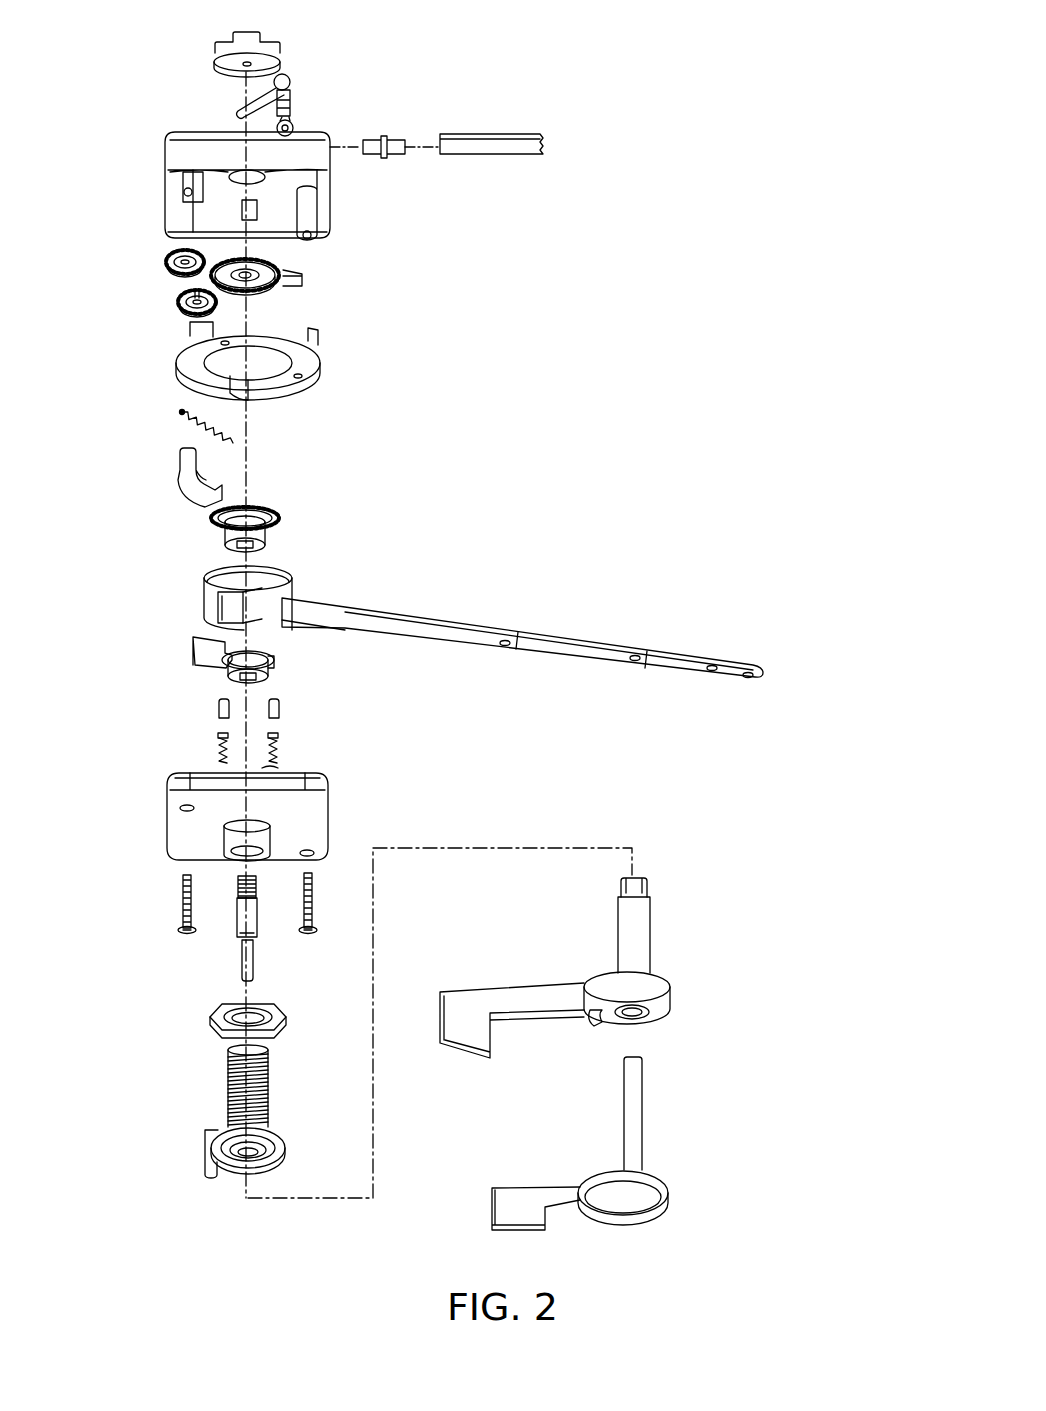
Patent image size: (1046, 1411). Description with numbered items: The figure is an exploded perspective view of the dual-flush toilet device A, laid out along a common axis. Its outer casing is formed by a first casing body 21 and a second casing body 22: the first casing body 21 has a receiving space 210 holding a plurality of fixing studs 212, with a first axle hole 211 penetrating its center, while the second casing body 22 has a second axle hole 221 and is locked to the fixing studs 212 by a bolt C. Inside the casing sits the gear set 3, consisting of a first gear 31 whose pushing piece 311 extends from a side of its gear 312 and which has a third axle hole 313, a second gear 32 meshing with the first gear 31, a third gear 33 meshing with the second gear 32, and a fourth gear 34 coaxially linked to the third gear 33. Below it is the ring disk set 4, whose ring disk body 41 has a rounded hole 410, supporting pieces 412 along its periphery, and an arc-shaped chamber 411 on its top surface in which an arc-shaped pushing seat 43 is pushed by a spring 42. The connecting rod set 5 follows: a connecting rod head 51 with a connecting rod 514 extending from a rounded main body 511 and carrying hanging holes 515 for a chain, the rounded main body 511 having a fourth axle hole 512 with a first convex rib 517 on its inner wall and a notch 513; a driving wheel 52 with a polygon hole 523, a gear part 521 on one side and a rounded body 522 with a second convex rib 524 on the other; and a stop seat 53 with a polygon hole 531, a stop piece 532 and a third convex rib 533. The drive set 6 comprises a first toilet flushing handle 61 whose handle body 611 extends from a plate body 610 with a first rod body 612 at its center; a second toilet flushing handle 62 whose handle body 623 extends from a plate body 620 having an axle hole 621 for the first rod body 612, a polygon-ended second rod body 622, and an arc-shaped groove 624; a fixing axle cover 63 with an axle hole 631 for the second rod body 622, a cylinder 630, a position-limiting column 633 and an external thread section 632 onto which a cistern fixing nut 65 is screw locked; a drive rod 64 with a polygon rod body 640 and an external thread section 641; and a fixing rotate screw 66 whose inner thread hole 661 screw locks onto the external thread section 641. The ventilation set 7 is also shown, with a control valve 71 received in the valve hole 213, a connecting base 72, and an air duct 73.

The dual-flush toilet device A is at (582, 266).
The fixing rotate screw 66 is at (255, 48).
The inner thread hole 661 is at (240, 65).
The control valve 71 is at (295, 90).
The valve hole 213 is at (293, 125).
The ventilation set 7 is at (436, 80).
The connecting base 72 is at (388, 130).
The air duct 73 is at (491, 106).
The first casing body 21 is at (259, 204).
The receiving space 210 is at (218, 190).
The first axle hole 211 is at (330, 170).
The fixing studs 212 is at (323, 222).
The gear set 3 is at (219, 286).
The second gear 32 is at (163, 262).
The third gear 33 is at (187, 292).
The fourth gear 34 is at (177, 308).
The first gear 31 is at (313, 292).
The pushing piece 311 is at (302, 278).
The gear 312 is at (247, 258).
The third axle hole 313 is at (253, 285).
The ring disk set 4 is at (278, 418).
The ring disk body 41 is at (256, 377).
The rounded hole 410 is at (218, 358).
The arc-shaped chamber 411 is at (193, 392).
The supporting pieces 412 is at (318, 337).
The spring 42 is at (180, 418).
The arc-shaped pushing seat 43 is at (170, 477).
The connecting rod set 5 is at (418, 626).
The driving wheel 52 is at (263, 520).
The gear part 521 is at (278, 510).
The rounded body 522 is at (262, 533).
The polygon hole 523 is at (240, 543).
The second convex rib 524 is at (253, 505).
The connecting rod head 51 is at (440, 658).
The rounded main body 511 is at (270, 598).
The fourth axle hole 512 is at (258, 622).
The notch 513 is at (217, 582).
The connecting rod 514 is at (547, 638).
The hanging holes 515 is at (750, 677).
The first convex rib 517 is at (217, 597).
The stop seat 53 is at (259, 681).
The polygon hole 531 is at (196, 675).
The stop piece 532 is at (193, 652).
The third convex rib 533 is at (270, 668).
The second casing body 22 is at (267, 808).
The second axle hole 221 is at (242, 852).
The bolt C is at (183, 895).
The drive rod 64 is at (243, 941).
The polygon rod body 640 is at (242, 917).
The external thread section 641 is at (240, 885).
The cistern fixing nut 65 is at (213, 1015).
The drive set 6 is at (435, 1085).
The fixing axle cover 63 is at (225, 1132).
The cylinder 630 is at (277, 1138).
The axle hole 631 is at (245, 1153).
The external thread section 632 is at (227, 1095).
The position-limiting column 633 is at (205, 1163).
The second toilet flushing handle 62 is at (608, 1002).
The plate body 620 is at (663, 990).
The axle hole 621 is at (637, 1017).
The second rod body 622 is at (647, 890).
The handle body 623 is at (463, 1055).
The arc-shaped groove 624 is at (587, 1025).
The first toilet flushing handle 61 is at (639, 1165).
The plate body 610 is at (643, 1210).
The handle body 611 is at (557, 1230).
The first rod body 612 is at (635, 1127).